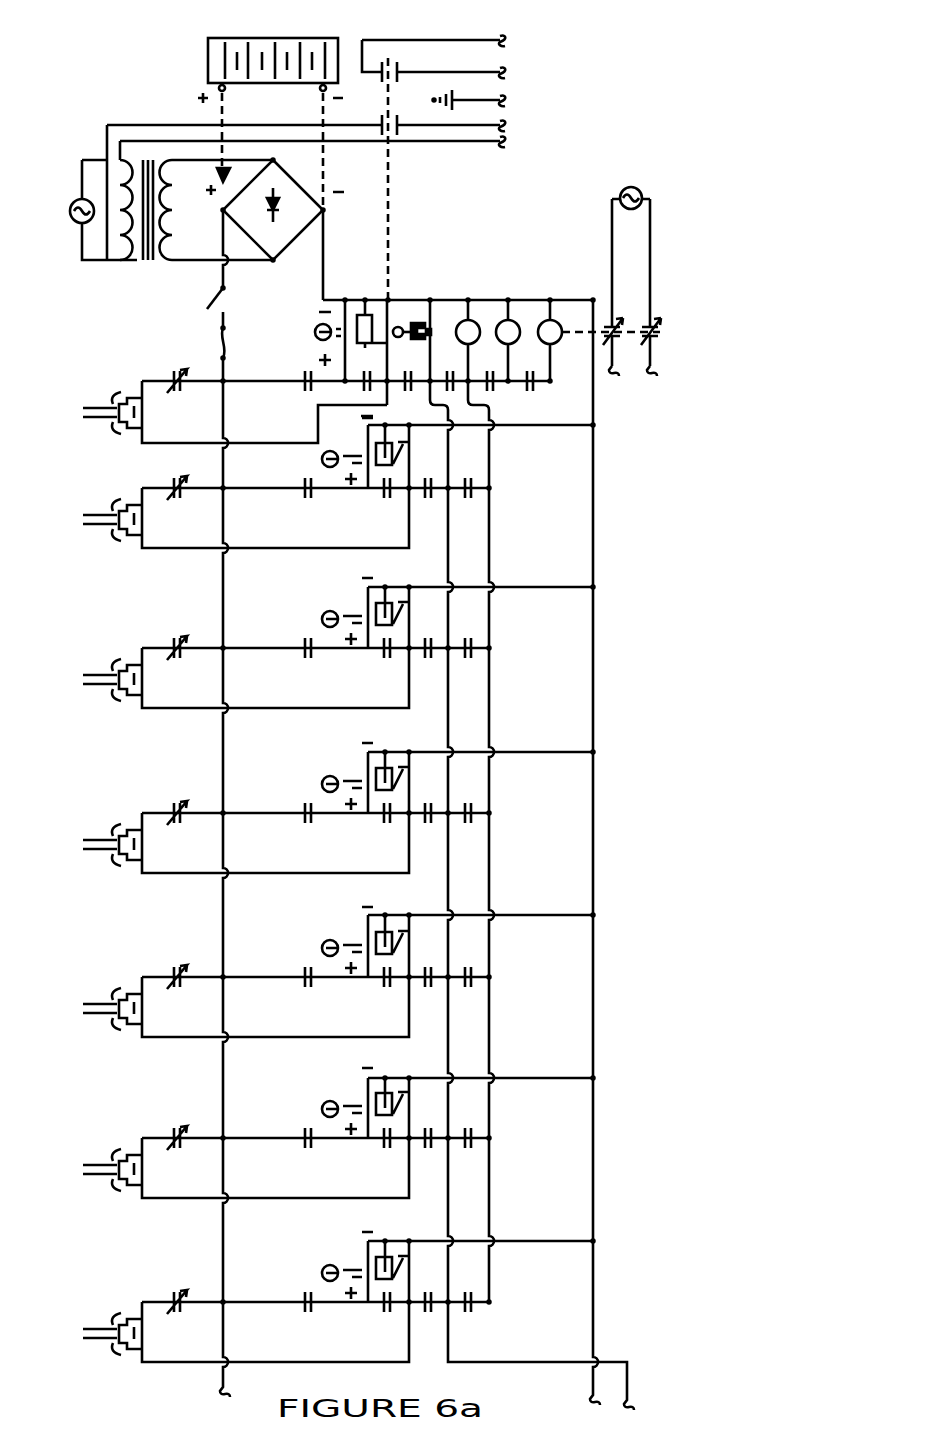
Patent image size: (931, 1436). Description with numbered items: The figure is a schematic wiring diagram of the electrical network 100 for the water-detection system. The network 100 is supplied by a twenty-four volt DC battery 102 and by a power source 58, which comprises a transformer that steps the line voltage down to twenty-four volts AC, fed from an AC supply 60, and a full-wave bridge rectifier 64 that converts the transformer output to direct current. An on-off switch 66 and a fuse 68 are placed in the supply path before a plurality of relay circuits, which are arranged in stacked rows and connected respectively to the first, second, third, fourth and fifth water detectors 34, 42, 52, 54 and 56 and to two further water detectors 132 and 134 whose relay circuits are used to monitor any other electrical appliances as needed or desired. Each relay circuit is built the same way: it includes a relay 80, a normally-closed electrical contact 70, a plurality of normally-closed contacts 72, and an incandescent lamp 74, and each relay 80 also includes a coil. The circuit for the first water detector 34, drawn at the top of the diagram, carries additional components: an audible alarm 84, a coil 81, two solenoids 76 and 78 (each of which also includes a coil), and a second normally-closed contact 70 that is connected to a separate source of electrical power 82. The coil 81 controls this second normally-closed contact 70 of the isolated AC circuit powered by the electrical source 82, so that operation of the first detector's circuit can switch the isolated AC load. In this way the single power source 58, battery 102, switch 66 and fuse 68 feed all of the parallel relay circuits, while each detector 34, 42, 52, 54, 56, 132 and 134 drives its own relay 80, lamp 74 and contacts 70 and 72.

The first water detector 34 is at (120, 395).
The second water detector 42 is at (118, 502).
The third water detector 52 is at (120, 662).
The fourth water detector 54 is at (120, 827).
The fifth water detector 56 is at (120, 991).
The power source 58 is at (167, 113).
The AC power source 60 is at (76, 224).
The full-wave bridge rectifier 64 is at (293, 244).
The on-off switch 66 is at (222, 289).
The fuse 68 is at (230, 342).
The normally-closed electrical contact 70 is at (184, 352).
The normally-closed contacts 72 is at (308, 391).
The incandescent lamp 74 is at (319, 324).
The solenoid 76 is at (470, 320).
The solenoid 78 is at (509, 320).
The relay 80 is at (366, 312).
The coil 81 is at (555, 318).
The source of electrical power 82 is at (642, 178).
The audible alarm 84 is at (412, 320).
The electrical network 100 is at (362, 30).
The battery 102 is at (208, 42).
The water detector 132 is at (120, 1152).
The water detector 134 is at (120, 1316).